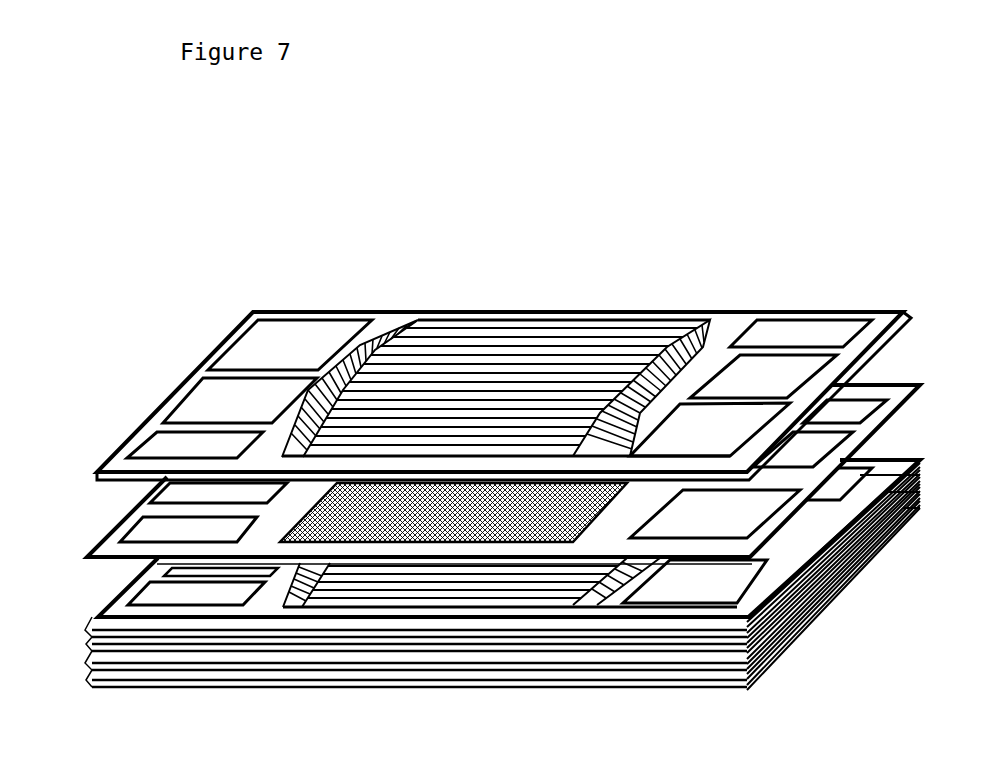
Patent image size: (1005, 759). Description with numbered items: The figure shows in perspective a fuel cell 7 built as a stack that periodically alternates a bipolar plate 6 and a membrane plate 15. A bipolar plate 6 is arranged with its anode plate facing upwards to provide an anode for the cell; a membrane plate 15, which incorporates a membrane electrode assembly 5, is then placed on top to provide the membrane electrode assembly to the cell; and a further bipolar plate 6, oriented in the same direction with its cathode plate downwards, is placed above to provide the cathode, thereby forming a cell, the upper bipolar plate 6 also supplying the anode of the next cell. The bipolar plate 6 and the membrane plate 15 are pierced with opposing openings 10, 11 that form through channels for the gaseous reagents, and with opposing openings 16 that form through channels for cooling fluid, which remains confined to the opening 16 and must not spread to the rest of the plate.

The fuel cell 7 is at (251, 232).
The opening 10 is at (253, 340).
The opening 16 is at (223, 383).
The opening 11 is at (162, 443).
The membrane plate 15 is at (117, 525).
The bipolar plate 6 is at (478, 587).
The membrane electrode assembly 5 is at (430, 587).